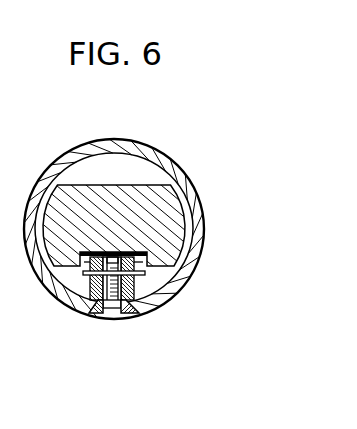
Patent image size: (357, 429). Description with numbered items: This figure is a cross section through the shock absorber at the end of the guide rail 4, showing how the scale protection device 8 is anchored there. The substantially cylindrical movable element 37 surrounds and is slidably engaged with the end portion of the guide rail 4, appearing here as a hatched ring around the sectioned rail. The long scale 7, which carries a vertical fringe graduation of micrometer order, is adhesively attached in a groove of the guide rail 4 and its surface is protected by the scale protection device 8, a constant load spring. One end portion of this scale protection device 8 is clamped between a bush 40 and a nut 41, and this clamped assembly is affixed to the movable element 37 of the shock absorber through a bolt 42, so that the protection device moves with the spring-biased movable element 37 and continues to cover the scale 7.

The guide rail 4 is at (85, 189).
The movable element 37 is at (165, 164).
The scale 7 is at (144, 254).
The nut 41 is at (135, 291).
The bush 40 is at (128, 314).
The scale protection device 8 is at (141, 284).
The bolt 42 is at (108, 312).